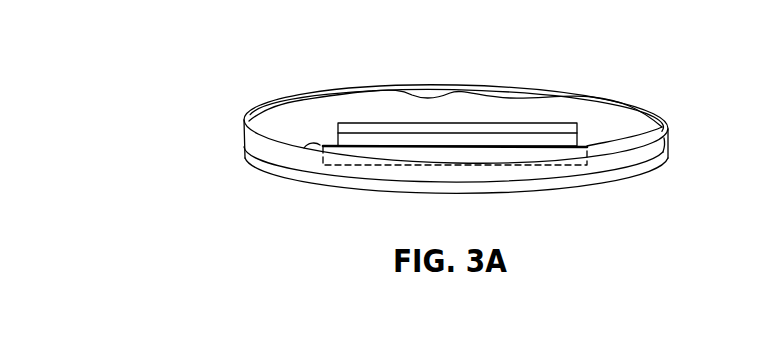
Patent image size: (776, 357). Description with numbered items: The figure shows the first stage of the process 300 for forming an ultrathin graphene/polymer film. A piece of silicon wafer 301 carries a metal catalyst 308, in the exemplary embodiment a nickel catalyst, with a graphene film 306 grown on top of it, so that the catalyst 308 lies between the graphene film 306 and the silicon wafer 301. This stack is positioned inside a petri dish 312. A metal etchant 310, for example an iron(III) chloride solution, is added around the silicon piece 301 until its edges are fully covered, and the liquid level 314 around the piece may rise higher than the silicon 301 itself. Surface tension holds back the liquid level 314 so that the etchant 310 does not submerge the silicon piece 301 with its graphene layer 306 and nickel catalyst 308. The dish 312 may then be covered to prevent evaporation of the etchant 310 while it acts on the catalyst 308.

The process 300 is at (160, 74).
The silicon wafer 301 is at (585, 158).
The graphene film 306 is at (468, 123).
The metal catalyst 308 is at (587, 148).
The metal etchant 310 is at (331, 131).
The petri dish 312 is at (636, 102).
The liquid level 314 is at (308, 148).